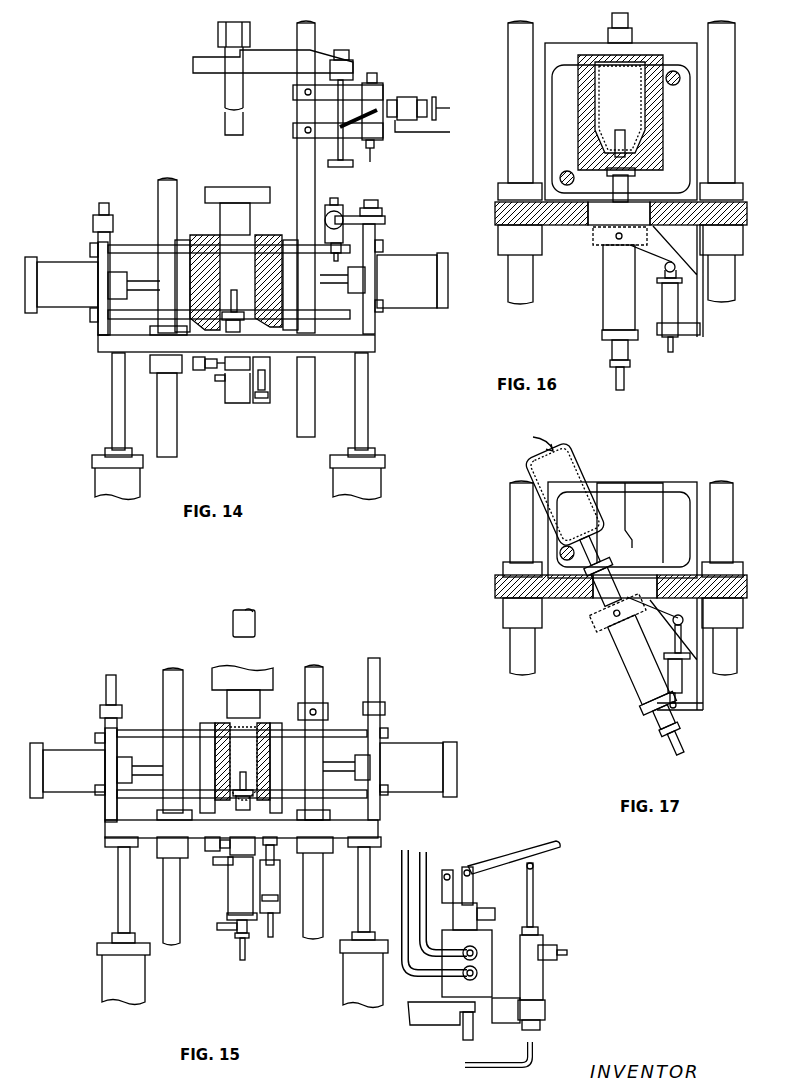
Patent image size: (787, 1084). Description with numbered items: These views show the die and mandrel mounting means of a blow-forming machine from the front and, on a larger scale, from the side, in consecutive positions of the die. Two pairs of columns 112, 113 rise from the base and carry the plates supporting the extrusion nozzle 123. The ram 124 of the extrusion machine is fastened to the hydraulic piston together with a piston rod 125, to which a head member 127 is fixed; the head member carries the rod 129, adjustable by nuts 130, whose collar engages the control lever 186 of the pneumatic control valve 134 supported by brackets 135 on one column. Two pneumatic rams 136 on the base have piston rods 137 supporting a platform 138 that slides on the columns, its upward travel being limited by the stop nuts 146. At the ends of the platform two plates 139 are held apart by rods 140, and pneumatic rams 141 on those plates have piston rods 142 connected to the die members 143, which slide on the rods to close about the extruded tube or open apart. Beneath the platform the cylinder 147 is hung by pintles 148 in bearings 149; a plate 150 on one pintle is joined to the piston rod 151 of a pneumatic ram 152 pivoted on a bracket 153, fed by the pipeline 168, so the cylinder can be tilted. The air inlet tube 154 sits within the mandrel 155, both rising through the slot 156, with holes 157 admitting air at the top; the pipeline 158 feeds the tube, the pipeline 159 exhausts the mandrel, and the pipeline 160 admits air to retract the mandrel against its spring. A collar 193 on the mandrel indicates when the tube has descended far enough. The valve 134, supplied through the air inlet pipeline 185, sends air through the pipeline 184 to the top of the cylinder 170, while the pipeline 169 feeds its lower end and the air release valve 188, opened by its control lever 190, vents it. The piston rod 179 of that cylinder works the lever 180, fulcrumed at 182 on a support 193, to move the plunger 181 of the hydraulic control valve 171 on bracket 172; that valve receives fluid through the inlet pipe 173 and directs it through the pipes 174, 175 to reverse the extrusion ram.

In FIG. 14, the columns 112 is at (177, 440).
In FIG. 15, the columns 112 is at (172, 670).
In FIG. 14, the columns 113 is at (315, 35).
In FIG. 16, the columns 113 is at (508, 45).
In FIG. 17, the columns 113 is at (510, 515).
In FIG. 15, the columns 113 is at (318, 668).
In FIG. 14, the extrusion nozzle 123 is at (235, 195).
In FIG. 15, the extrusion nozzle 123 is at (250, 680).
In FIG. 14, the ram 124 is at (226, 103).
In FIG. 15, the ram 124 is at (255, 620).
In FIG. 14, the piston rod 125 is at (218, 30).
In FIG. 14, the head member 127 is at (193, 60).
In FIG. 14, the rod 129 is at (348, 52).
In FIG. 14, the nuts 130 is at (353, 68).
In FIG. 14, the pneumatic control valve 134 is at (380, 84).
In FIG. 14, the brackets 135 is at (295, 132).
In FIG. 14, the pneumatic rams 136 is at (97, 487).
In FIG. 15, the pneumatic rams 136 is at (100, 975).
In FIG. 14, the piston rods 137 is at (112, 405).
In FIG. 15, the piston rods 137 is at (118, 870).
In FIG. 14, the platform 138 is at (375, 343).
In FIG. 16, the platform 138 is at (495, 210).
In FIG. 17, the platform 138 is at (621, 586).
In FIG. 15, the platform 138 is at (105, 828).
In FIG. 14, the plates 139 is at (370, 262).
In FIG. 16, the plates 139 is at (568, 58).
In FIG. 17, the plates 139 is at (698, 485).
In FIG. 15, the plates 139 is at (241, 739).
In FIG. 16, the rods 140 is at (560, 178).
In FIG. 14, the pneumatic rams 141 is at (76, 270).
In FIG. 15, the pneumatic rams 141 is at (70, 780).
In FIG. 14, the piston rods 142 is at (133, 282).
In FIG. 15, the piston rods 142 is at (133, 770).
In FIG. 14, the die members 143 is at (200, 235).
In FIG. 16, the die members 143 is at (640, 57).
In FIG. 17, the die members 143 is at (655, 490).
In FIG. 15, the die members 143 is at (212, 723).
In FIG. 14, the stop nuts 146 is at (106, 203).
In FIG. 16, the stop nuts 146 is at (630, 23).
In FIG. 15, the stop nuts 146 is at (112, 675).
In FIG. 14, the cylinder 147 is at (227, 395).
In FIG. 16, the cylinder 147 is at (605, 265).
In FIG. 17, the cylinder 147 is at (655, 690).
In FIG. 15, the cylinder 147 is at (228, 890).
In FIG. 16, the pintles 148 is at (612, 240).
In FIG. 17, the pintles 148 is at (625, 625).
In FIG. 14, the bearings 149 is at (200, 370).
In FIG. 16, the bearings 149 is at (600, 236).
In FIG. 17, the bearings 149 is at (606, 620).
In FIG. 16, the plate 150 is at (650, 252).
In FIG. 17, the plate 150 is at (655, 612).
In FIG. 16, the piston rod 151 is at (664, 273).
In FIG. 17, the piston rod 151 is at (672, 630).
In FIG. 14, the pneumatic ram 152 is at (262, 403).
In FIG. 16, the pneumatic ram 152 is at (680, 300).
In FIG. 17, the pneumatic ram 152 is at (672, 675).
In FIG. 15, the pneumatic ram 152 is at (280, 885).
In FIG. 16, the bracket 153 is at (700, 328).
In FIG. 17, the bracket 153 is at (695, 708).
In FIG. 14, the air inlet tube 154 is at (233, 300).
In FIG. 16, the air inlet tube 154 is at (636, 113).
In FIG. 17, the air inlet tube 154 is at (592, 503).
In FIG. 16, the mandrel 155 is at (613, 183).
In FIG. 17, the mandrel 155 is at (610, 590).
In FIG. 16, the slot 156 is at (650, 228).
In FIG. 17, the slot 156 is at (650, 585).
In FIG. 16, the holes 157 is at (617, 140).
In FIG. 17, the holes 157 is at (592, 522).
In FIG. 16, the pipeline 158 is at (624, 383).
In FIG. 17, the pipeline 158 is at (682, 748).
In FIG. 15, the pipeline 158 is at (241, 958).
In FIG. 15, the pipeline 159 is at (228, 930).
In FIG. 15, the pipeline 160 is at (222, 865).
In FIG. 16, the pipeline 168 is at (672, 352).
In FIG. 17, the pipeline 168 is at (670, 708).
In FIG. 15, the pipeline 168 is at (270, 937).
In FIG. 15, the pipeline 169 is at (495, 1060).
In FIG. 15, the cylinder 170 is at (543, 985).
In FIG. 15, the hydraulic control valve 171 is at (485, 935).
In FIG. 15, the bracket 172 is at (410, 1015).
In FIG. 15, the inlet pipe 173 is at (463, 1030).
In FIG. 15, the pipe 174 is at (427, 852).
In FIG. 15, the pipe 175 is at (403, 878).
In FIG. 15, the piston rod 179 is at (534, 890).
In FIG. 15, the lever 180 is at (500, 860).
In FIG. 15, the plunger 181 is at (473, 885).
In FIG. 15, the fulcrum 182 is at (450, 870).
In FIG. 14, the pipeline 184 is at (372, 155).
In FIG. 14, the air inlet pipeline 185 is at (420, 133).
In FIG. 14, the control lever 186 is at (350, 182).
In FIG. 14, the air release valve 188 is at (343, 212).
In FIG. 14, the control lever 190 is at (378, 218).
In FIG. 16, the support 193 is at (635, 172).
In FIG. 17, the support 193 is at (612, 552).